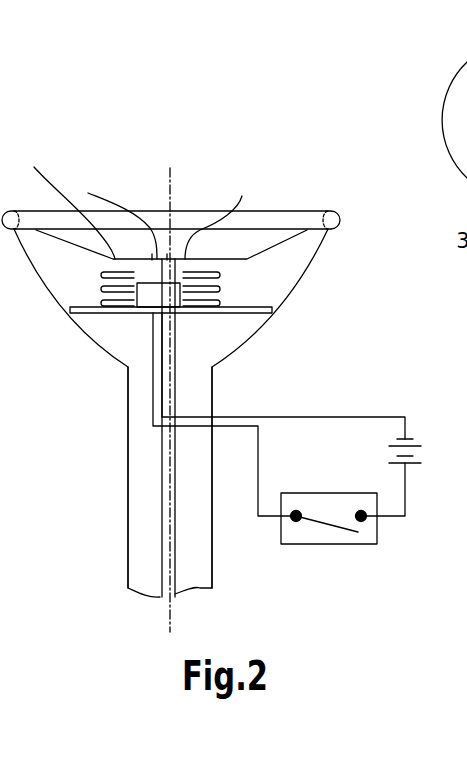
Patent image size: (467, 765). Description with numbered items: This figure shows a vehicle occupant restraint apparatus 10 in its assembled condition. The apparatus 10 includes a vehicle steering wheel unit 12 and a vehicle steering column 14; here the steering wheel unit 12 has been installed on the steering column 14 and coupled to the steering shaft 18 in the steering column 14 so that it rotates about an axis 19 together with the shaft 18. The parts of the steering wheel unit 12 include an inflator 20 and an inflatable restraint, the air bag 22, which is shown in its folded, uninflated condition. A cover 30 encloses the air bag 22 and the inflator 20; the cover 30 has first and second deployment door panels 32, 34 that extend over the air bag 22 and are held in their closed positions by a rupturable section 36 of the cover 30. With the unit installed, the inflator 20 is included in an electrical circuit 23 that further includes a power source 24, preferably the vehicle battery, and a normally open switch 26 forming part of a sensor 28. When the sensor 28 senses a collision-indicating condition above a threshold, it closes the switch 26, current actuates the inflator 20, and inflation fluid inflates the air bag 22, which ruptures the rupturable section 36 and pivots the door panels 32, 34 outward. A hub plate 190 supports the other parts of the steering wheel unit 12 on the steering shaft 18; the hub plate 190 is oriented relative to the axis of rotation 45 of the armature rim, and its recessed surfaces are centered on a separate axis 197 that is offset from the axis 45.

The vehicle occupant restraint apparatus 10 is at (325, 177).
The vehicle steering wheel unit 12 is at (343, 227).
The vehicle steering column 14 is at (213, 535).
The steering shaft 18 is at (167, 510).
The axis 19 is at (167, 557).
The inflator 20 is at (180, 290).
The air bag 22 is at (220, 272).
The electrical circuit 23 is at (398, 419).
The power source 24 is at (417, 462).
The normally open switch 26 is at (324, 526).
The sensor 28 is at (295, 545).
The cover 30 is at (44, 288).
The first deployment door panel 32 is at (225, 217).
The second deployment door panel 34 is at (67, 204).
The rupturable section 36 is at (118, 214).
The axis of rotation 45 is at (168, 176).
The hub plate 190 is at (85, 313).
The axis 197 is at (153, 345).